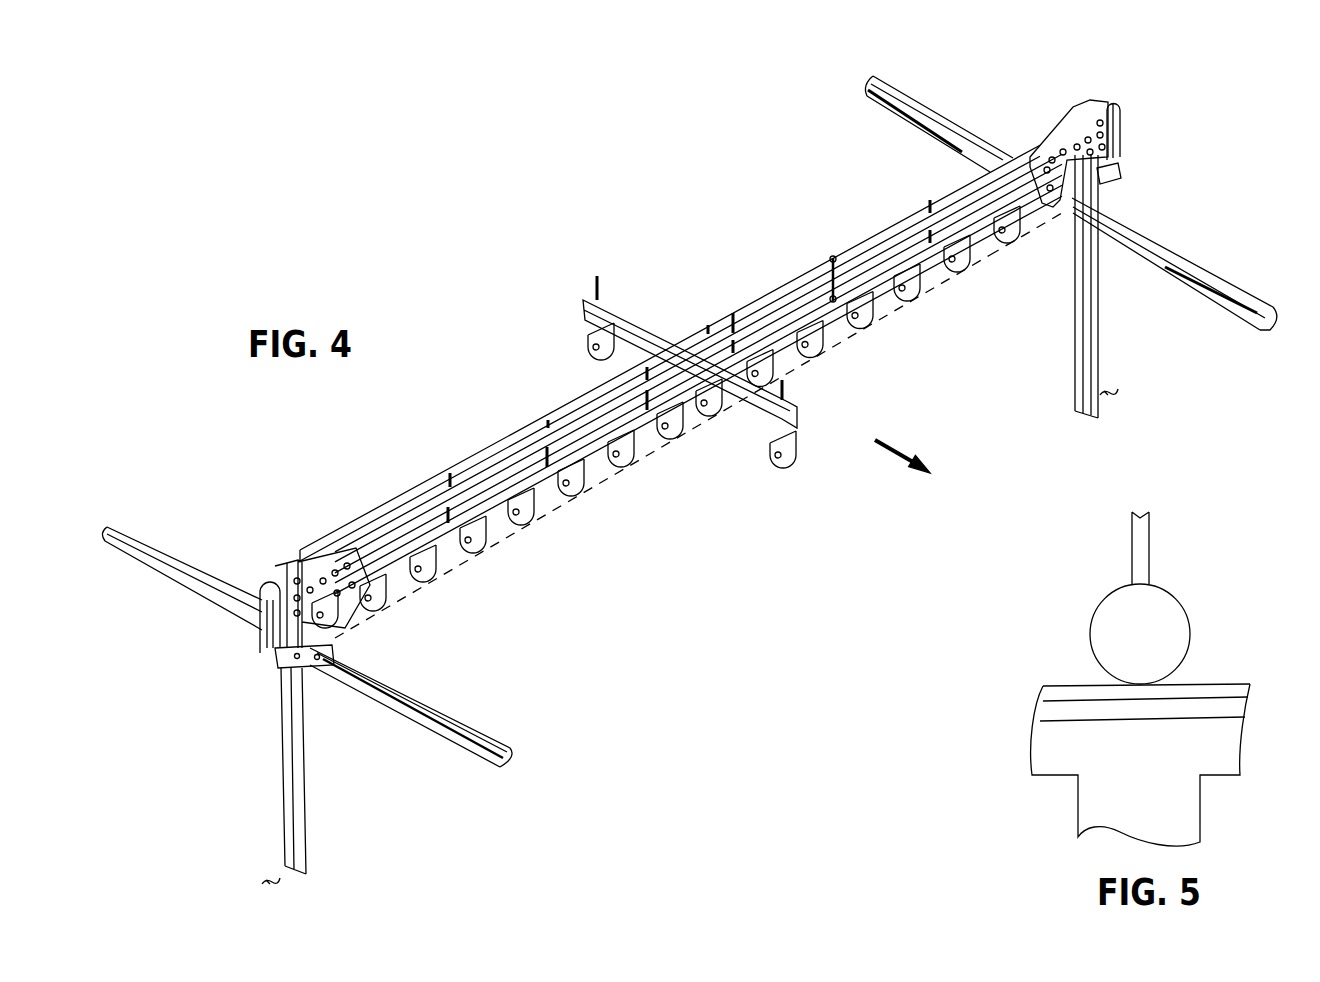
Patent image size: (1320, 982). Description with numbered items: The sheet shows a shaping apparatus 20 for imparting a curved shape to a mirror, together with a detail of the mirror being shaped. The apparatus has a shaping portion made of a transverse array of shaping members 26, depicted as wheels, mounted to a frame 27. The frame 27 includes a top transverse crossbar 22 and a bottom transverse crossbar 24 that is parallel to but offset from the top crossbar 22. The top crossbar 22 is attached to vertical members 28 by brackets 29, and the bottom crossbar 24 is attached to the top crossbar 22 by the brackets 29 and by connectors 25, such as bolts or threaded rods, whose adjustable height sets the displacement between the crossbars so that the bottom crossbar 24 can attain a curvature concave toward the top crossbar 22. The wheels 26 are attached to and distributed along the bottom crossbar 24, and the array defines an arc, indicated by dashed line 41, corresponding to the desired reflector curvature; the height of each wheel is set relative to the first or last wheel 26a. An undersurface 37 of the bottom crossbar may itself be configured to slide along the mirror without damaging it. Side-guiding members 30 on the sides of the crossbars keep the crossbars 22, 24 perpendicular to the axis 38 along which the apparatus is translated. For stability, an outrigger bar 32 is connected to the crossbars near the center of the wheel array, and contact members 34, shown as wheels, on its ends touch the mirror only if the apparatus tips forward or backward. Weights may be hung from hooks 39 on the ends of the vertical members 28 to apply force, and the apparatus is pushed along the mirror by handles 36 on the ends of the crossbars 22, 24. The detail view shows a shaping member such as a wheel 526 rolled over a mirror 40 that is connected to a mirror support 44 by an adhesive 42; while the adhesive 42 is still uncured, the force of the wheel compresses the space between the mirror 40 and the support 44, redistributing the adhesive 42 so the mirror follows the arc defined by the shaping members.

In FIG. 4, the shaping apparatus 20 is at (557, 264).
In FIG. 4, the top transverse crossbar 22 is at (884, 231).
In FIG. 4, the bottom transverse crossbar 24 is at (855, 287).
In FIG. 4, the connectors 25 is at (817, 290).
In FIG. 4, the shaping members 26 is at (580, 493).
In FIG. 4, the first or last wheel 26a is at (335, 623).
In FIG. 4, the frame 27 is at (288, 563).
In FIG. 4, the vertical members 28 is at (306, 810).
In FIG. 4, the brackets 29 is at (1098, 100).
In FIG. 4, the side-guiding members 30 is at (451, 714).
In FIG. 4, the outrigger bar 32 is at (797, 420).
In FIG. 4, the contact members 34 is at (795, 470).
In FIG. 4, the handles 36 is at (1122, 125).
In FIG. 4, the undersurface of the bottom crossbar 37 is at (447, 543).
In FIG. 4, the axis 38 is at (897, 452).
In FIG. 4, the hooks 39 is at (262, 882).
In FIG. 4, the dashed line 41 is at (990, 258).
In FIG. 5, the shaping member 526 is at (1158, 645).
In FIG. 5, the mirror 40 is at (1250, 693).
In FIG. 5, the adhesive 42 is at (1237, 713).
In FIG. 5, the mirror support 44 is at (1156, 765).